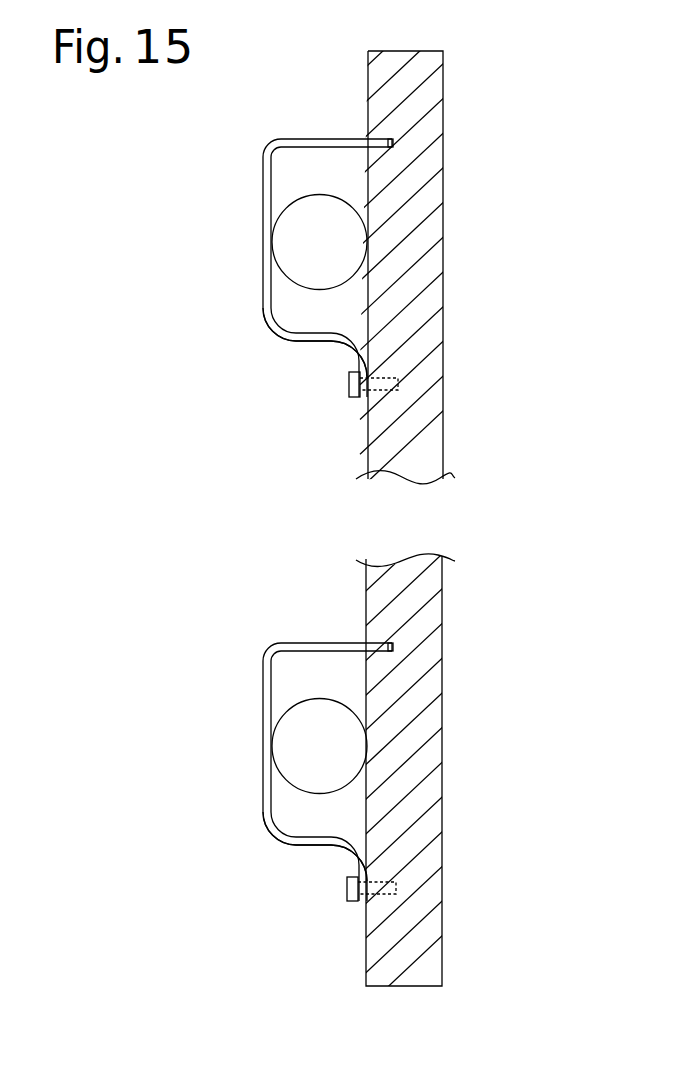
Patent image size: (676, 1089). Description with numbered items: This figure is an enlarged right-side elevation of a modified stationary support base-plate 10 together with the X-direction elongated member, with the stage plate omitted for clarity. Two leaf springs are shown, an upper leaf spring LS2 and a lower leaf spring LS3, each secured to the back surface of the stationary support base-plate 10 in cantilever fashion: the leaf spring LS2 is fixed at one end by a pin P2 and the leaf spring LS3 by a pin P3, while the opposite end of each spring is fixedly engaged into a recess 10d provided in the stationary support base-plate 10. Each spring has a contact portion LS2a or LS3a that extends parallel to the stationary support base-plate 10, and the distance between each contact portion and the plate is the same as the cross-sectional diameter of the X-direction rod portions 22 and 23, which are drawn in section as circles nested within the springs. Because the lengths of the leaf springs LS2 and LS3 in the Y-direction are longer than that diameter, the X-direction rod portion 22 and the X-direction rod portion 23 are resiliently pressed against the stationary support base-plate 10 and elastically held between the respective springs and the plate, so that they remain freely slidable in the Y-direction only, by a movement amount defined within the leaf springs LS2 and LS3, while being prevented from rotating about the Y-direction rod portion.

The stationary support base-plate 10 is at (424, 196).
The recesses 10d is at (393, 143).
The leaf spring LS2 is at (263, 180).
The contact portion LS2a is at (263, 303).
The X-direction rod portion 22 is at (303, 236).
The pin P2 is at (349, 386).
The leaf spring LS3 is at (263, 688).
The contact portion LS3a is at (263, 801).
The X-direction rod portion 23 is at (303, 740).
The pin P3 is at (347, 890).